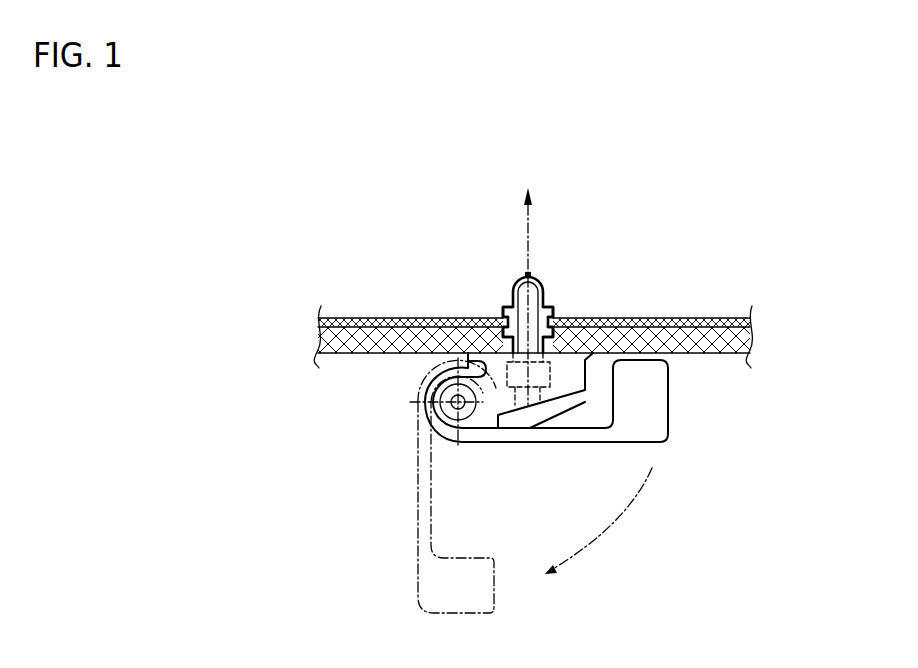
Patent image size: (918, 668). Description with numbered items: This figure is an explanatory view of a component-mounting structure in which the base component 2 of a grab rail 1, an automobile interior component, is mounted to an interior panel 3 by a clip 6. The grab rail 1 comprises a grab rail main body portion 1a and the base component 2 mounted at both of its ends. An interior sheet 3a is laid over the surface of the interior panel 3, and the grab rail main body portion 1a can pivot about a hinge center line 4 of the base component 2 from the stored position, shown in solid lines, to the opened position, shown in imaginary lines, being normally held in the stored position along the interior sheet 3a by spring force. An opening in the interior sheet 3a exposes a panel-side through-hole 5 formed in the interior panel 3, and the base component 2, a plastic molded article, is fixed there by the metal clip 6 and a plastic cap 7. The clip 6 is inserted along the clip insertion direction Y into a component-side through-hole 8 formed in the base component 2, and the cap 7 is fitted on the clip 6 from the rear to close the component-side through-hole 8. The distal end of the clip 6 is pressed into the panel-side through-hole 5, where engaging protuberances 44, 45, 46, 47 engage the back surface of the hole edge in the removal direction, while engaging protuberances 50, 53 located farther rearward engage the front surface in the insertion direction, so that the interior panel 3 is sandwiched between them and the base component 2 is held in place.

The grab rail 1 is at (613, 483).
The grab rail main body portion 1a is at (664, 449).
The base component 2 is at (597, 434).
The interior panel 3 is at (573, 302).
The interior sheet 3a is at (752, 334).
The hinge center line 4 is at (465, 411).
The panel-side through-hole 5 is at (539, 315).
The clip 6 is at (542, 289).
The cap 7 is at (519, 430).
The component-side through-hole 8 is at (540, 382).
The engaging protuberance 44 is at (446, 295).
The engaging protuberance 45 is at (503, 309).
The engaging protuberance 46 is at (608, 294).
The engaging protuberance 47 is at (553, 309).
The engaging protuberance 50 is at (503, 331).
The engaging protuberance 53 is at (553, 331).
The clip insertion direction Y is at (530, 235).